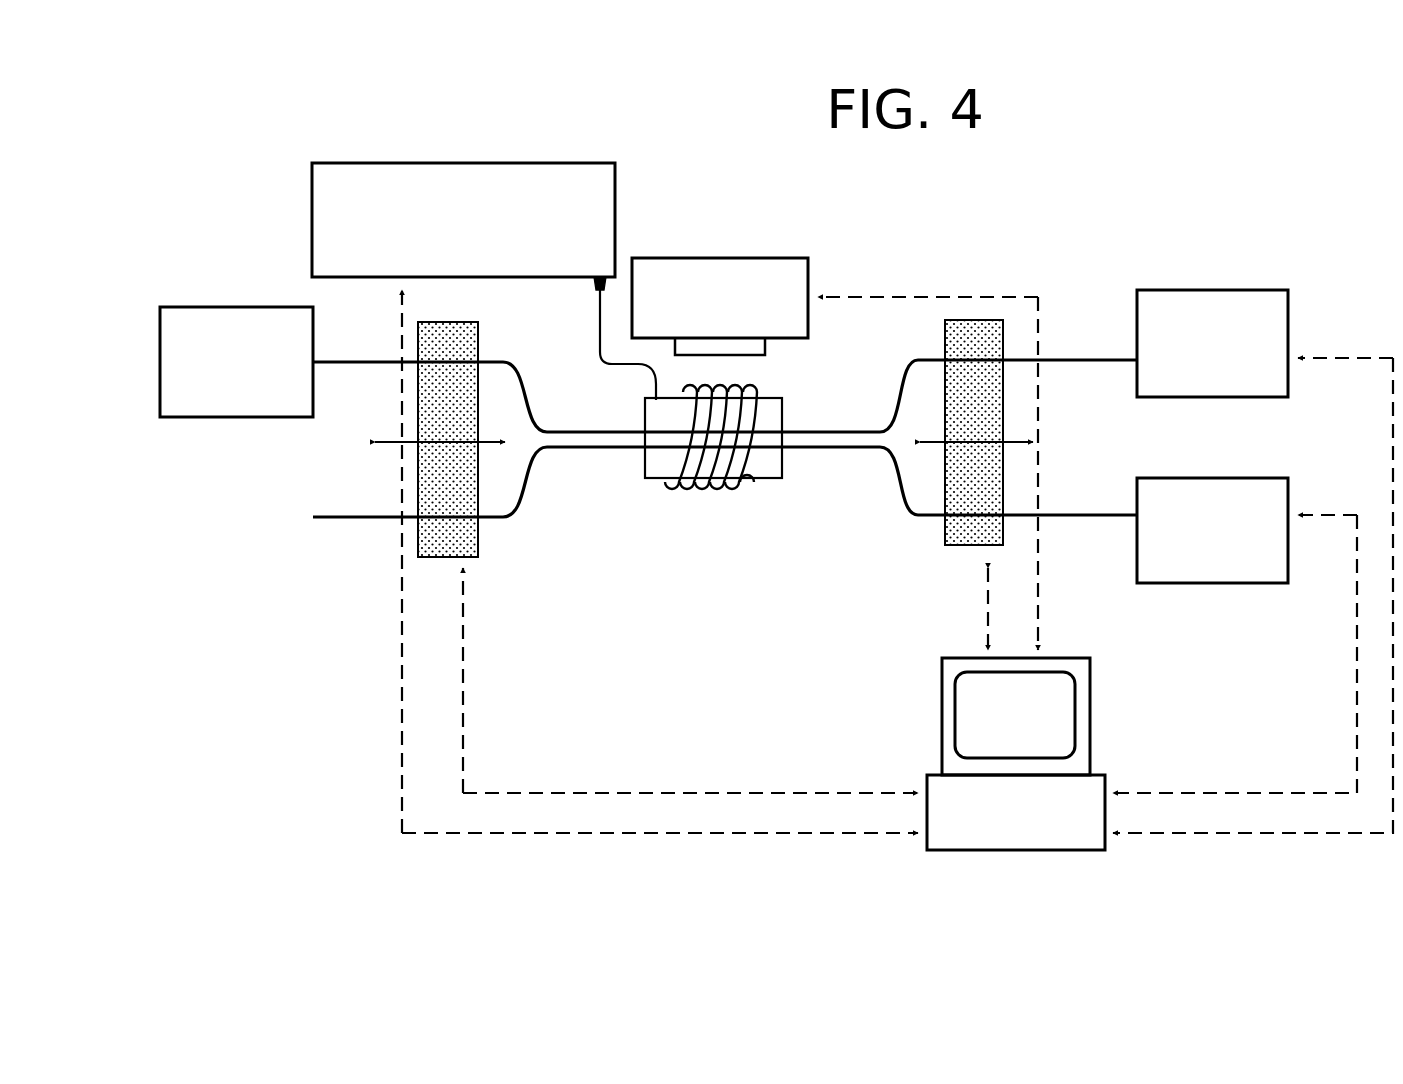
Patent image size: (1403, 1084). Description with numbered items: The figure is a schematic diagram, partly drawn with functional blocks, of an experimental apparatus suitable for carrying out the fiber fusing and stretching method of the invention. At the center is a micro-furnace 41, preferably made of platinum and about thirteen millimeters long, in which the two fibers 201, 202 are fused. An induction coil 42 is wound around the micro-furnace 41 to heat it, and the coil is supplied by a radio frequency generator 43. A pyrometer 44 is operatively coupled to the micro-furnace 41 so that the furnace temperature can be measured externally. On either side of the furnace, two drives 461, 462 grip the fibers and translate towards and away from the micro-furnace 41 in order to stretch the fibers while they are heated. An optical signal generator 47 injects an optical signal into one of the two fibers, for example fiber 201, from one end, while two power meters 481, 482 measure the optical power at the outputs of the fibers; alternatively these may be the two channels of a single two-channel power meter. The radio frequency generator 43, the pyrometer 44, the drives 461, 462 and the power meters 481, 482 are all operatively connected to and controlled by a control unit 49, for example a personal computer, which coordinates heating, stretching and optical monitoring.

The micro-furnace 41 is at (778, 480).
The induction coil 42 is at (690, 492).
The radio frequency generator 43 is at (312, 218).
The pyrometer 44 is at (723, 258).
The optical signal generator 47 is at (232, 418).
The control unit 49 is at (1065, 852).
The fiber 201 is at (1075, 348).
The fiber 202 is at (340, 524).
The drive 461 is at (484, 566).
The drive 462 is at (940, 566).
The power meter 481 is at (1290, 303).
The power meter 482 is at (1207, 478).